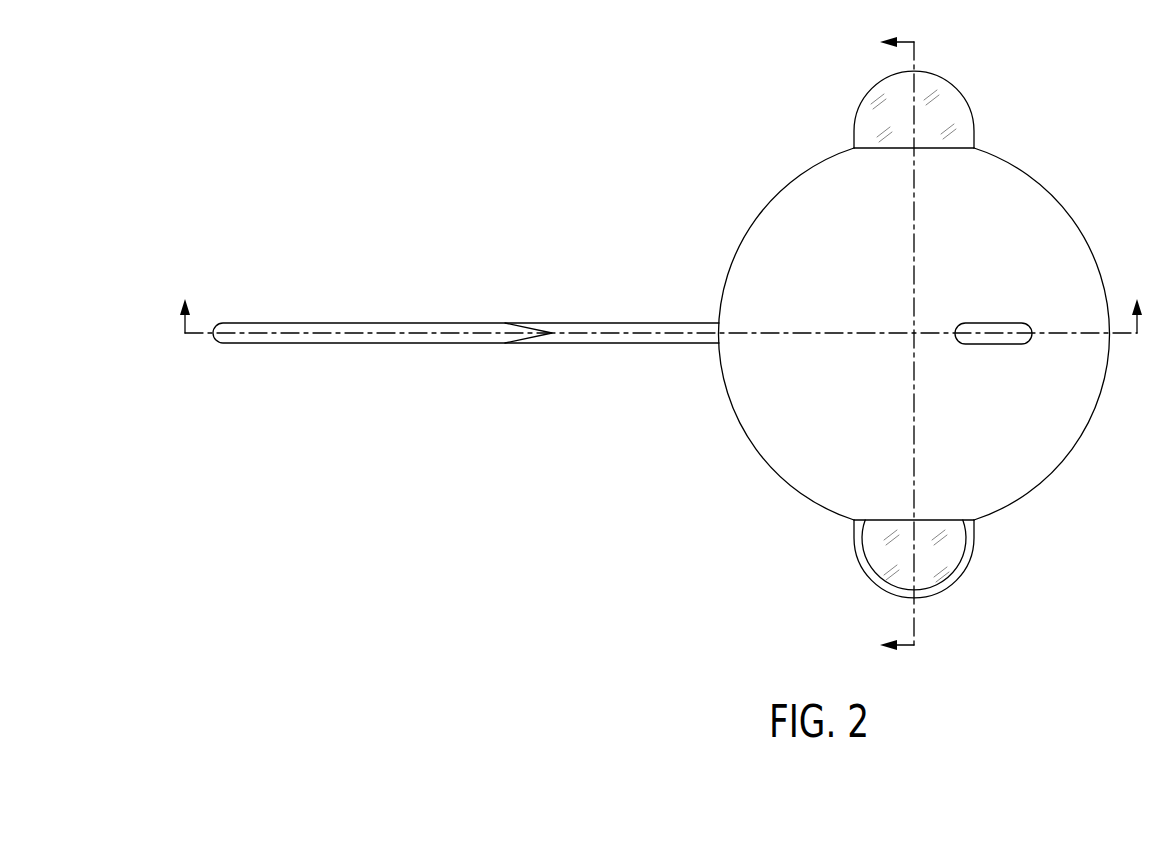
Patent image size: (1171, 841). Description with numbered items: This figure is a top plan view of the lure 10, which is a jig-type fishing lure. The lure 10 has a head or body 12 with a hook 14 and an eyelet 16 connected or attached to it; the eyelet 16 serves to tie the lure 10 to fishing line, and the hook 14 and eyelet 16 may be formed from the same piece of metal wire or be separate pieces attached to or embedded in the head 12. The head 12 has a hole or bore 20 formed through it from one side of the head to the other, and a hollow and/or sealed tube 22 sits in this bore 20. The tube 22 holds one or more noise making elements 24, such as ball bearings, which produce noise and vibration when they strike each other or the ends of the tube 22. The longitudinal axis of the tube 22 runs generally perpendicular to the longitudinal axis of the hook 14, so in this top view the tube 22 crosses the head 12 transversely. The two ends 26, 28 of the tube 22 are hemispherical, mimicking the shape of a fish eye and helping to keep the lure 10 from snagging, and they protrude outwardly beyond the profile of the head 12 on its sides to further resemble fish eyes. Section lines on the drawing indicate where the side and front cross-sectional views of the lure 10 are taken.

The lure 10 is at (702, 150).
The head 12 is at (1068, 213).
The hook 14 is at (316, 329).
The eyelet 16 is at (990, 344).
The bore 20 is at (962, 522).
The tube 22 is at (978, 127).
The noise making elements 24 is at (879, 561).
The end of tube 26 is at (968, 100).
The end of tube 28 is at (952, 587).